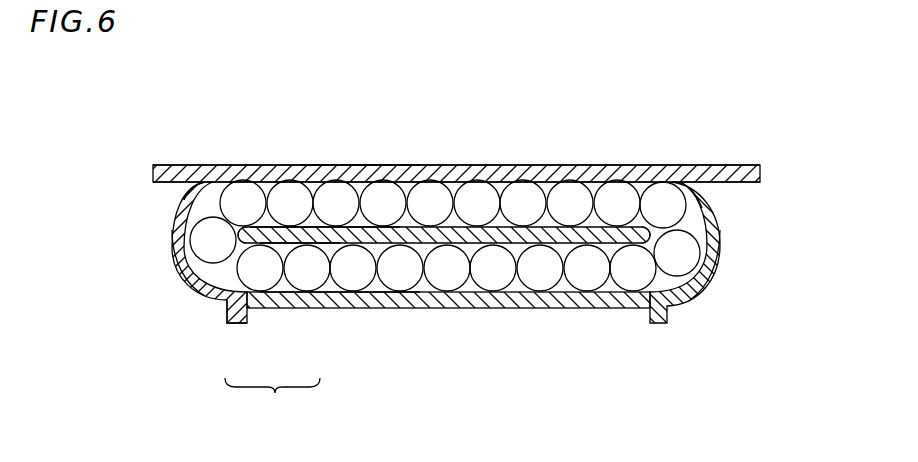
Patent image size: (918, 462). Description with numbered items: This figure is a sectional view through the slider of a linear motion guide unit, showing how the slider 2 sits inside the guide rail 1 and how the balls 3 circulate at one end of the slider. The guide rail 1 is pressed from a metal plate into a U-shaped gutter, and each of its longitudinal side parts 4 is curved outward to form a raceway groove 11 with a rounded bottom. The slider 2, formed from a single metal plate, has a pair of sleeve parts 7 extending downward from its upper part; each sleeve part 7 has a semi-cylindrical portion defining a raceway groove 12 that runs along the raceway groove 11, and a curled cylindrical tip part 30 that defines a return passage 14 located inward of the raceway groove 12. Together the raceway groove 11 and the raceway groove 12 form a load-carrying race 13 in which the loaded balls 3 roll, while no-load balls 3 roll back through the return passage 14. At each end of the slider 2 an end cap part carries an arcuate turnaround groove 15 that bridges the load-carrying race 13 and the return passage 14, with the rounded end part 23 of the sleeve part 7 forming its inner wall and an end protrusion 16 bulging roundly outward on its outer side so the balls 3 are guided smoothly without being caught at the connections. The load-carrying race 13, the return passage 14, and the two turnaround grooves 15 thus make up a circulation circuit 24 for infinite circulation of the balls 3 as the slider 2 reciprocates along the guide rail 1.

The guide rail 1 is at (273, 166).
The slider 2 is at (607, 308).
The balls 3 is at (521, 197).
The longitudinal side part 4 is at (460, 167).
The sleeve part 7 is at (457, 235).
The raceway groove 11 is at (390, 182).
The raceway groove 12 is at (300, 243).
The load-carrying race 13 is at (361, 172).
The return passage 14 is at (332, 292).
The turnaround groove 15 is at (200, 204).
The end protrusion 16 is at (172, 248).
The end part 23 is at (650, 228).
The circulation circuit 24 is at (272, 405).
The tip part 30 is at (408, 300).